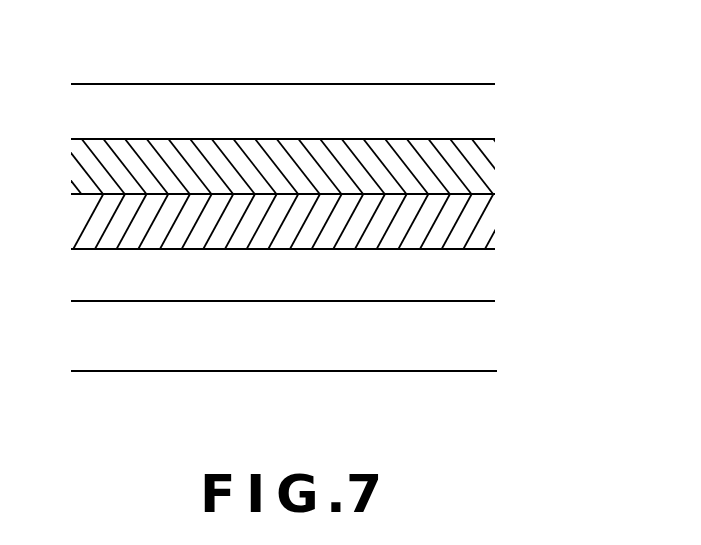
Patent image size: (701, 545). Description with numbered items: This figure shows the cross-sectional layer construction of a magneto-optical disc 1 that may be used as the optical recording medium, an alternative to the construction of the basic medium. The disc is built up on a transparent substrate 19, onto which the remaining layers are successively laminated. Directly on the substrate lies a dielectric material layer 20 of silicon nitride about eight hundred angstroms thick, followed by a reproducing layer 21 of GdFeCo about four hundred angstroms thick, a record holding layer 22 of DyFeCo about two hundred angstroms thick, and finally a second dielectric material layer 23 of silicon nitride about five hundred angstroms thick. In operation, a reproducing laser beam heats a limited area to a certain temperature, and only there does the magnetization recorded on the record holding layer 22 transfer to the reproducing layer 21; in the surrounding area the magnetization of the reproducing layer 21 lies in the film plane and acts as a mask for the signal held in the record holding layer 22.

The optical recording medium 1 is at (384, 72).
The transparent substrate 19 is at (475, 340).
The dielectric material layer 20 is at (472, 280).
The reproducing layer 21 is at (473, 230).
The record holding layer 22 is at (472, 173).
The dielectric material layer 23 is at (472, 117).